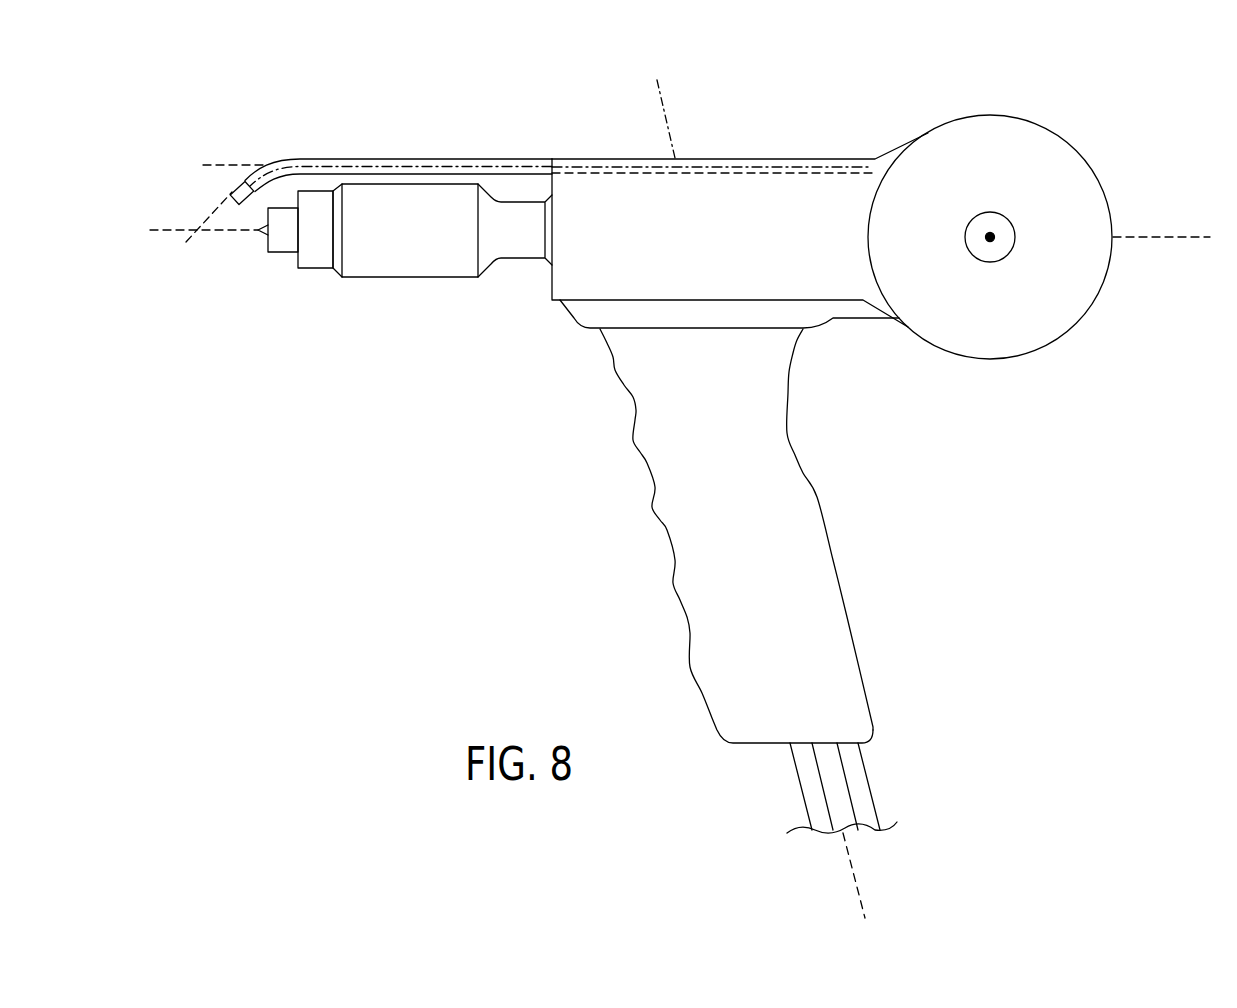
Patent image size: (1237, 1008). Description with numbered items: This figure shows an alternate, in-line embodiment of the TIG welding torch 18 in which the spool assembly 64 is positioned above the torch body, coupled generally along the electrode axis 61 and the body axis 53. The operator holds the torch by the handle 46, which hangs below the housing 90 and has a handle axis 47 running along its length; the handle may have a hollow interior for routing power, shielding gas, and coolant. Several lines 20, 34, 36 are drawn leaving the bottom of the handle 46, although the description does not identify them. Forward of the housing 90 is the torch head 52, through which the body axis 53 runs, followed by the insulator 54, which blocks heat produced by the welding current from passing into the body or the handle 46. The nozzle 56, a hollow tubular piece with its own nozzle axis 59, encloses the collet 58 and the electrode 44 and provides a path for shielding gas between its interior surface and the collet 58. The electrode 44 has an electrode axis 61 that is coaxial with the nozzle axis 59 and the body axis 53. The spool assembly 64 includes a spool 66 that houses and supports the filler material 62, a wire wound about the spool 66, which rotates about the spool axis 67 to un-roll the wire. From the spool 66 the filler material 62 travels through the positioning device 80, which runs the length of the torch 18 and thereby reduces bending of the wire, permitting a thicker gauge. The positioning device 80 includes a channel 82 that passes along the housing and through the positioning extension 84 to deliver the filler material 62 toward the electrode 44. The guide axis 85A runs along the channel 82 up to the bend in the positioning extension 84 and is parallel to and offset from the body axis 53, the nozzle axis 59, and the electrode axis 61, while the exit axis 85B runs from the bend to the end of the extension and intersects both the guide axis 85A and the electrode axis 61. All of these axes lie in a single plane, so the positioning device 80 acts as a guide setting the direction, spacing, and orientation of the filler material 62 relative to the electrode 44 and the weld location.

The TIG welding torch 18 is at (968, 523).
The cable 20 is at (858, 788).
The supply hose 34 is at (827, 760).
The supply hose 36 is at (812, 795).
The electrode 44 is at (257, 237).
The handle 46 is at (768, 562).
The handle axis 47 is at (660, 110).
The torch head 52 is at (442, 278).
The body axis 53 is at (1162, 238).
The insulator 54 is at (335, 278).
The nozzle 56 is at (315, 269).
The collet 58 is at (280, 253).
The nozzle axis 59 is at (150, 230).
The electrode axis 61 is at (180, 228).
The filler material 62 is at (237, 188).
The spool assembly 64 is at (997, 95).
The spool 66 is at (1105, 193).
The spool axis 67 is at (988, 239).
The positioning device 80 is at (508, 110).
The channel 82 is at (795, 158).
The positioning extension 84 is at (352, 158).
The guide axis 85A is at (237, 163).
The exit axis 85B is at (302, 139).
The housing 90 is at (733, 252).